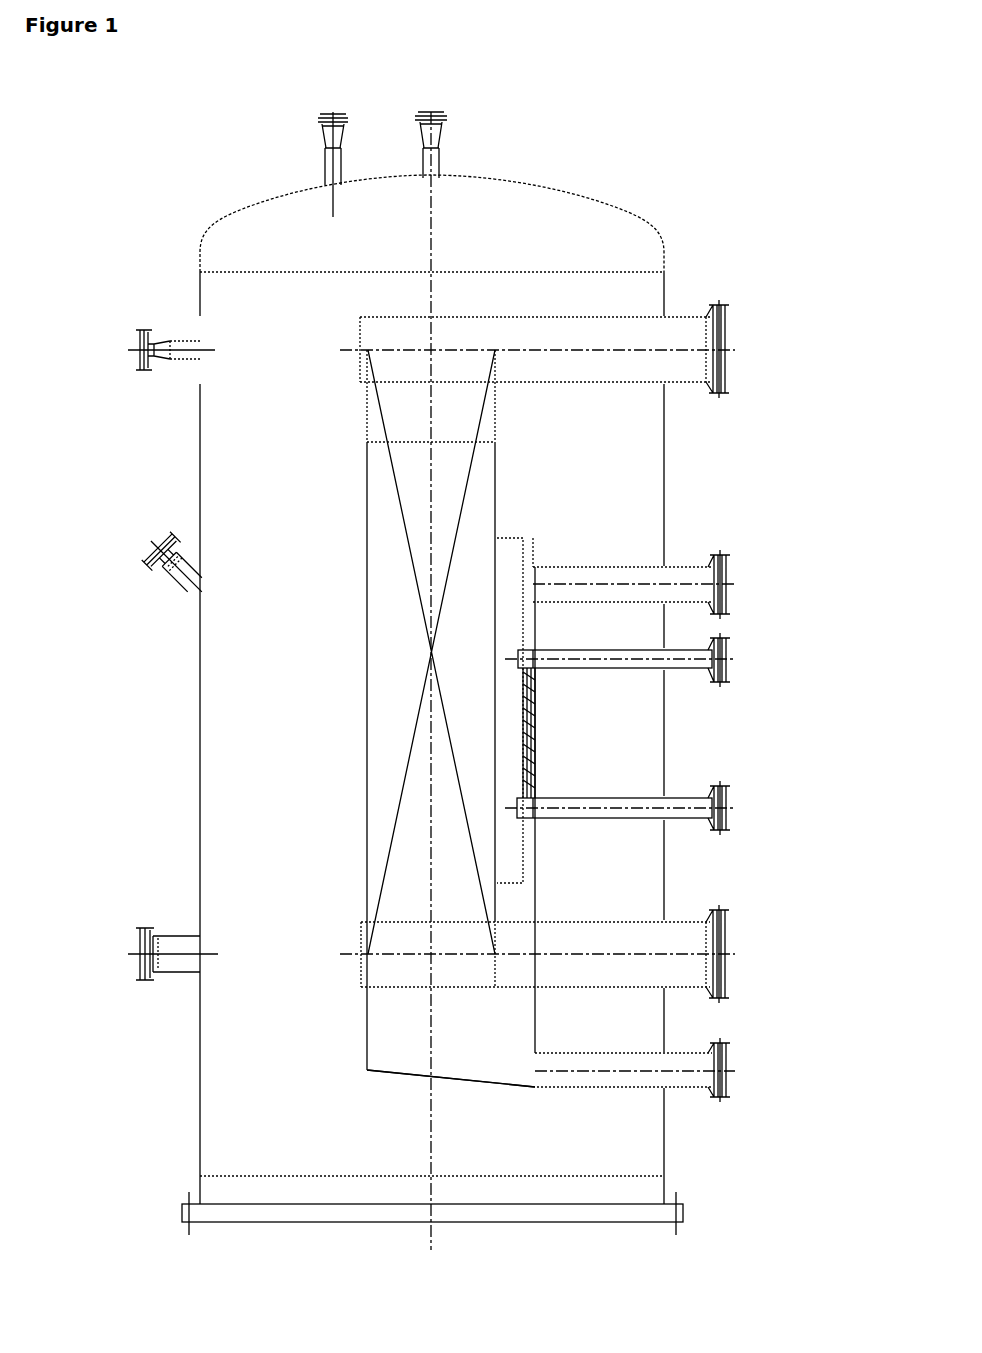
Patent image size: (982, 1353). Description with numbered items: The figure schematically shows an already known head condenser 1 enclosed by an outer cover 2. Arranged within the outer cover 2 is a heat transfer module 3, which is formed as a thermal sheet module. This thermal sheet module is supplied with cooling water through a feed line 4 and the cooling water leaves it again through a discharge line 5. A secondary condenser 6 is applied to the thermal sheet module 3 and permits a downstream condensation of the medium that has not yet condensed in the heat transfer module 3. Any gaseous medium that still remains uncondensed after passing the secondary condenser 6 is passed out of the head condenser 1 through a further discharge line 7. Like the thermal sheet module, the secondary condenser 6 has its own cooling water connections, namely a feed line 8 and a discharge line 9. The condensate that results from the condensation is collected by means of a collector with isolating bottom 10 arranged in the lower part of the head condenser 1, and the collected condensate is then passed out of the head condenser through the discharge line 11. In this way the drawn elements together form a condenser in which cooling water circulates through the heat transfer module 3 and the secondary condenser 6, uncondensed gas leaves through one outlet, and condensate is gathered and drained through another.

The head condenser 1 is at (608, 175).
The outer cover 2 is at (653, 228).
The heat transfer module 3 is at (482, 498).
The feed line 4 is at (732, 940).
The discharge line 5 is at (730, 335).
The secondary condenser 6 is at (530, 733).
The discharge line 7 is at (730, 574).
The feed line 8 is at (730, 651).
The discharge line 9 is at (732, 803).
The collector with isolating bottom 10 is at (503, 1090).
The discharge line 11 is at (733, 1062).